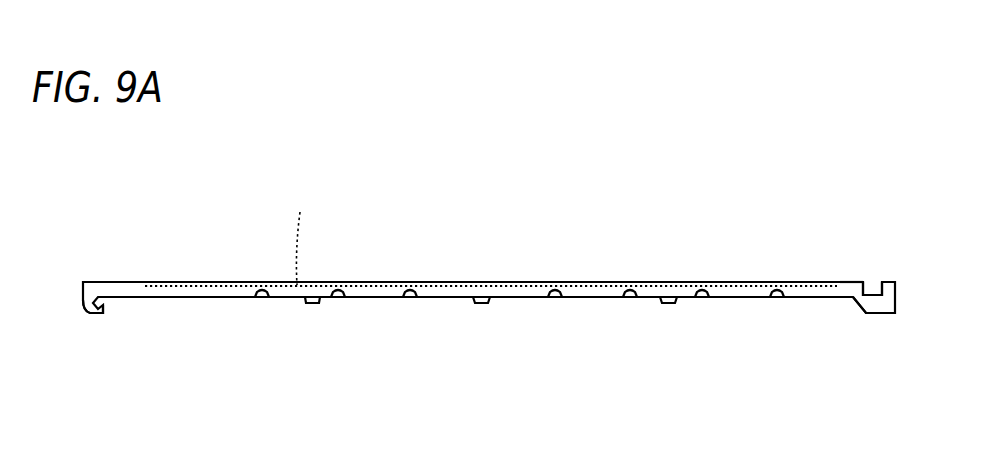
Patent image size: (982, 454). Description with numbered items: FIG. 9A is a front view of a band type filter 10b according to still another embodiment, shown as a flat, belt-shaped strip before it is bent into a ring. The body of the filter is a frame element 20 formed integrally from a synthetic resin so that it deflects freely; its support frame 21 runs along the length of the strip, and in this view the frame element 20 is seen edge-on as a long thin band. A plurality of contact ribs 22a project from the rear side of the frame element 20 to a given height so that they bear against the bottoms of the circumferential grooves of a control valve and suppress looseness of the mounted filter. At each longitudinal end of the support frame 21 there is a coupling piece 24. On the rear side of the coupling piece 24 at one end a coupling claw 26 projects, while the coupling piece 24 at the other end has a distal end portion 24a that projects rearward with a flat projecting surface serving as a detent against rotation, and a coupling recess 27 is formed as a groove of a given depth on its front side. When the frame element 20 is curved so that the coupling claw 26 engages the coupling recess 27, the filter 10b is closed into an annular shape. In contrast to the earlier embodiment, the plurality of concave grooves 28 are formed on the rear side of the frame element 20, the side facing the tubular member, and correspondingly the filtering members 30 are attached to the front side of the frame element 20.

The filter 10b is at (491, 285).
The frame element 20 is at (428, 281).
The support frame 21 is at (530, 288).
The contact rib 22a is at (310, 304).
The coupling piece 24 is at (118, 281).
The distal end portion 24a is at (875, 306).
The coupling claw 26 is at (97, 313).
The coupling recess 27 is at (873, 288).
The concave groove 28 is at (190, 298).
The filtering member 30 is at (299, 235).